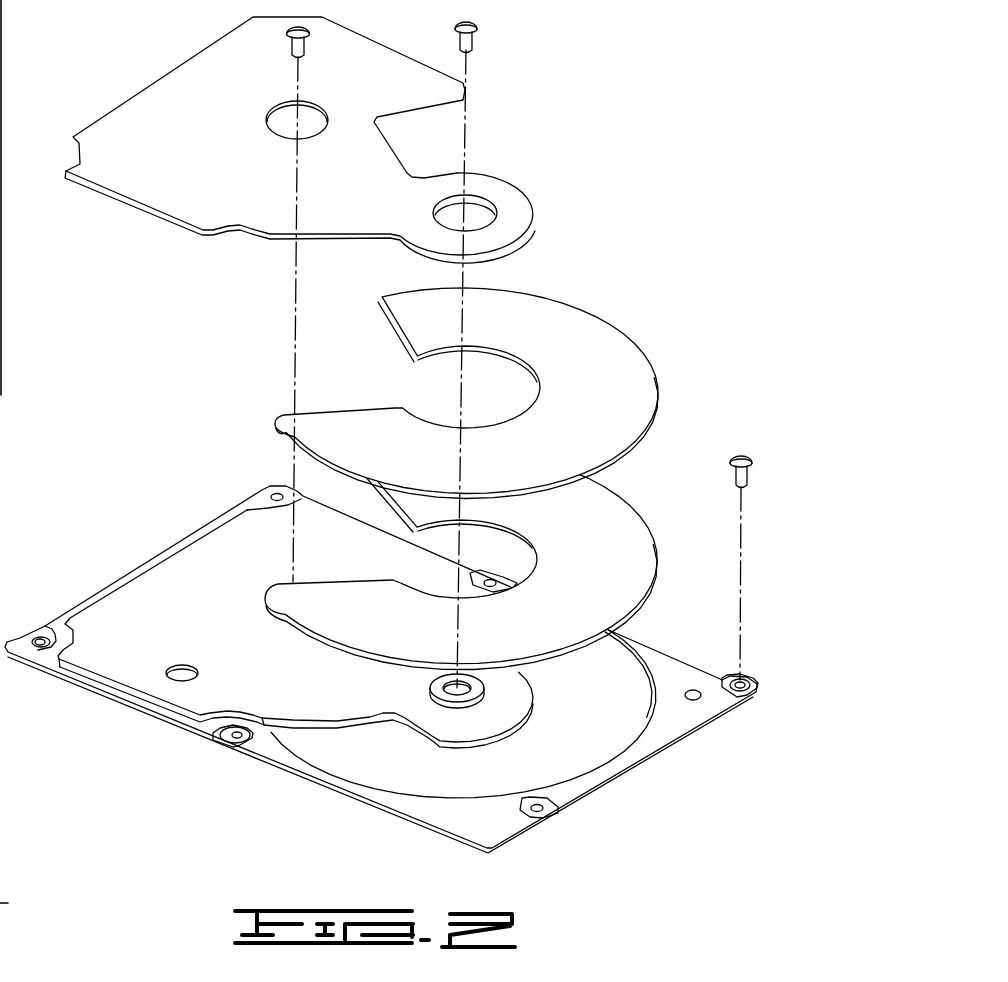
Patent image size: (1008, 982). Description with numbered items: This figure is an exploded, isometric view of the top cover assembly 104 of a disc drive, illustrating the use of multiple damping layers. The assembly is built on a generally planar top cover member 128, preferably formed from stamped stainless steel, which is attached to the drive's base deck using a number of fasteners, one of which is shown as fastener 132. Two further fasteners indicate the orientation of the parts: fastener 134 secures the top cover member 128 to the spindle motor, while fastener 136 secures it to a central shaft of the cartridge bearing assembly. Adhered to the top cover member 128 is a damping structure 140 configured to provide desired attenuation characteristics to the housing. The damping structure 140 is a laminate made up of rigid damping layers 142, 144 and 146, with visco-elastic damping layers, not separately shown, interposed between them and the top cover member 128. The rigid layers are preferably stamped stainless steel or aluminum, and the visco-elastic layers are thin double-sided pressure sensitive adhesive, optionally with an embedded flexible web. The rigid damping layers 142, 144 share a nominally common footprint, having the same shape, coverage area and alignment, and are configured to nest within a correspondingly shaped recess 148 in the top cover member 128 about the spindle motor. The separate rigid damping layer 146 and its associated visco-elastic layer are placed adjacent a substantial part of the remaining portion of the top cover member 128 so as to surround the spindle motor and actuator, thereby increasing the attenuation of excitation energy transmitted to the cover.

The top cover assembly 104 is at (581, 62).
The top cover member 128 is at (210, 560).
The fastener 132 is at (750, 455).
The fastener 134 is at (478, 32).
The fastener 136 is at (289, 45).
The damping structure 140 is at (628, 274).
The rigid damping layer 142 is at (618, 352).
The rigid damping layer 144 is at (601, 518).
The rigid damping layer 146 is at (162, 197).
The recess 148 is at (603, 722).